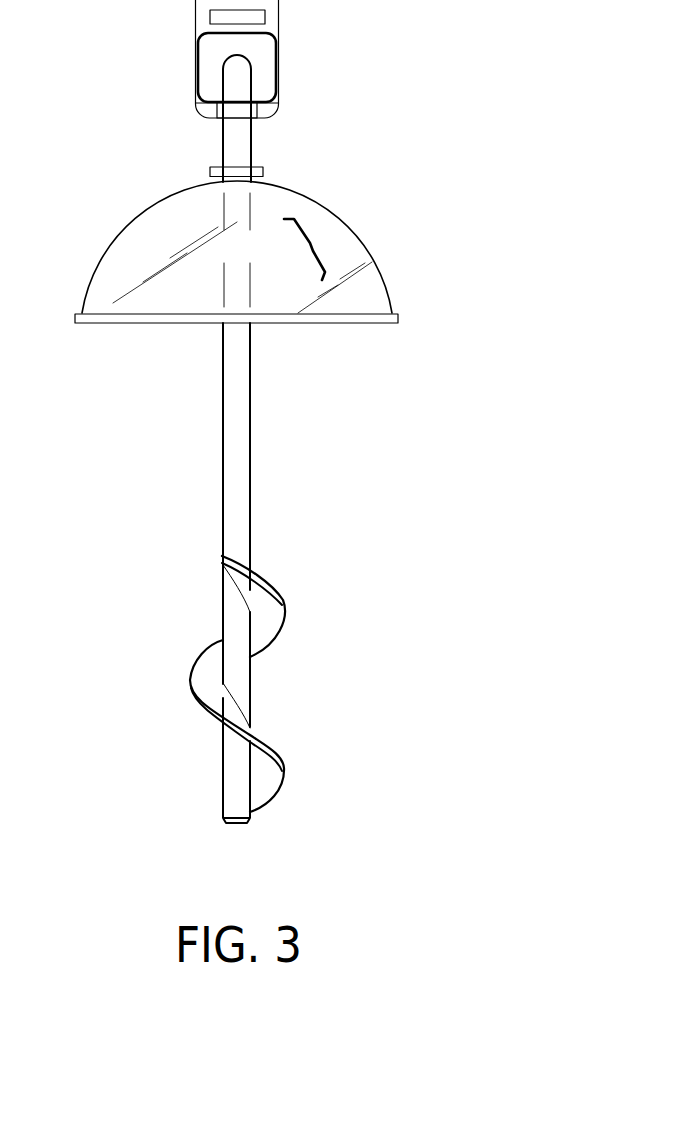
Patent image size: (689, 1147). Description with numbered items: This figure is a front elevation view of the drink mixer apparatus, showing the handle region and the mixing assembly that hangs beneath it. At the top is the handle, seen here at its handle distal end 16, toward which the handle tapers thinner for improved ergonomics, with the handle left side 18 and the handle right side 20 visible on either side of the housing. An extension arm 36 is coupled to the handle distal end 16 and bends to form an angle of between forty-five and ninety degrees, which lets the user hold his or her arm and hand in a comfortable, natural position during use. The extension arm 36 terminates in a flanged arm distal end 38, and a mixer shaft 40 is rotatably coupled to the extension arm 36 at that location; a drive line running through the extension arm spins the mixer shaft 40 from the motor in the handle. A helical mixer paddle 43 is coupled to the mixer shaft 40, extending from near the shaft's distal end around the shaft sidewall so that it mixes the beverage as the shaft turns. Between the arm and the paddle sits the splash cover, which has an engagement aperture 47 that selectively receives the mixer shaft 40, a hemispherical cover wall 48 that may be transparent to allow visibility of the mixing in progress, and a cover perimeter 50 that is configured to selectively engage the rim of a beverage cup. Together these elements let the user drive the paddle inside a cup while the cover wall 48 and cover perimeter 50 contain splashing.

The handle distal end 16 is at (268, 77).
The handle left side 18 is at (278, 43).
The handle right side 20 is at (239, 59).
The extension arm 36 is at (233, 142).
The flanged arm distal end 38 is at (260, 172).
The mixer shaft 40 is at (240, 453).
The mixer paddle 43 is at (277, 612).
The engagement aperture 47 is at (237, 182).
The cover wall 48 is at (310, 243).
The cover perimeter 50 is at (378, 318).